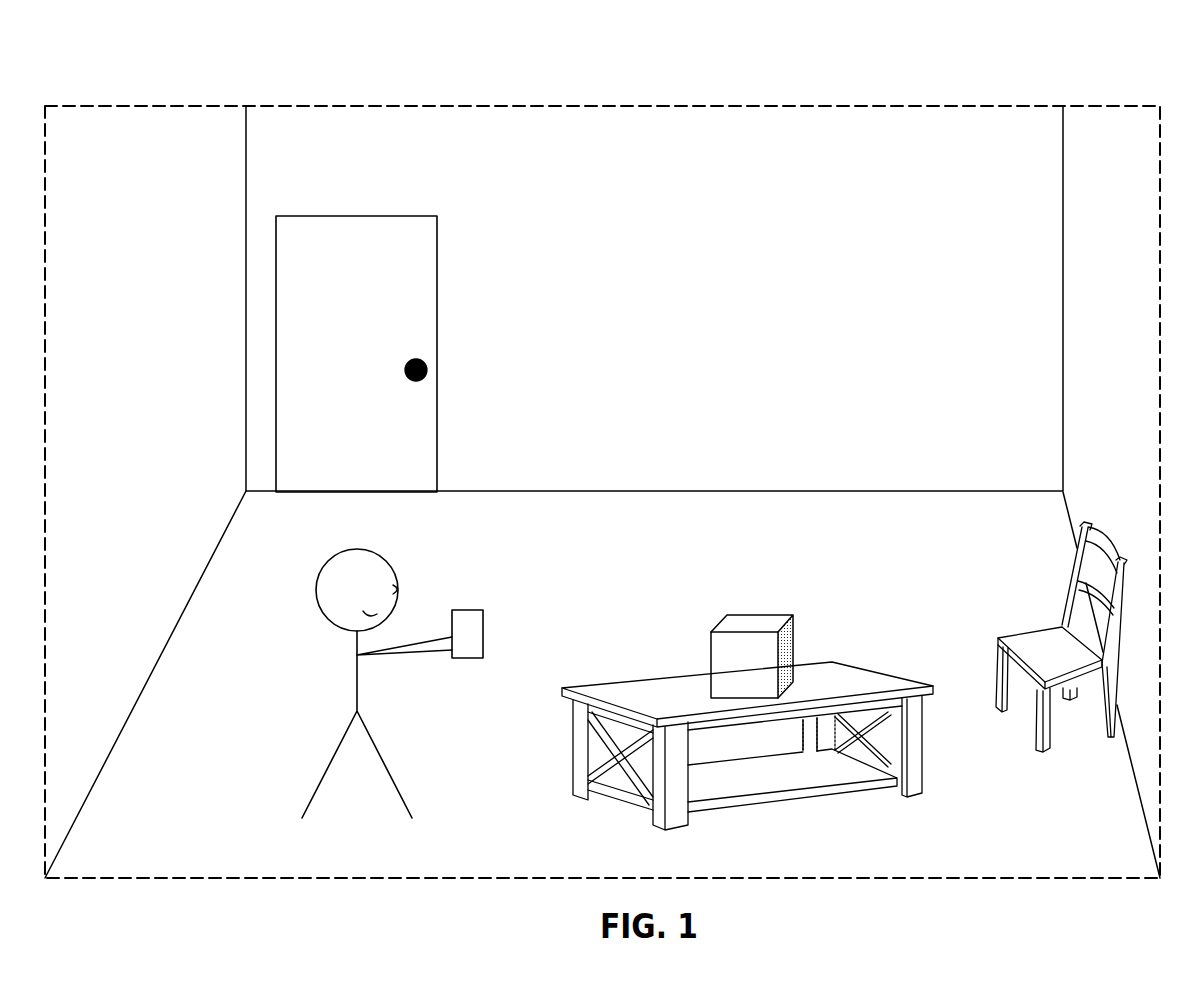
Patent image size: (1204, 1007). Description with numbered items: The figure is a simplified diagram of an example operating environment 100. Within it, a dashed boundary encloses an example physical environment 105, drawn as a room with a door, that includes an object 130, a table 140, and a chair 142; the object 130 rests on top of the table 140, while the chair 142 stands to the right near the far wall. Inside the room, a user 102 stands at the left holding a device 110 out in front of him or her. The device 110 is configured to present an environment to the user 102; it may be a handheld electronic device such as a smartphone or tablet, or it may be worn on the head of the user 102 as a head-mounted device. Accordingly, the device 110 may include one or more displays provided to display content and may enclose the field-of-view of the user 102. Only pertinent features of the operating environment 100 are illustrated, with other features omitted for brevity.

The operating environment 100 is at (144, 54).
The physical environment 105 is at (602, 492).
The user 102 is at (357, 677).
The device 110 is at (483, 634).
The object 130 is at (735, 665).
The table 140 is at (837, 687).
The chair 142 is at (1097, 538).